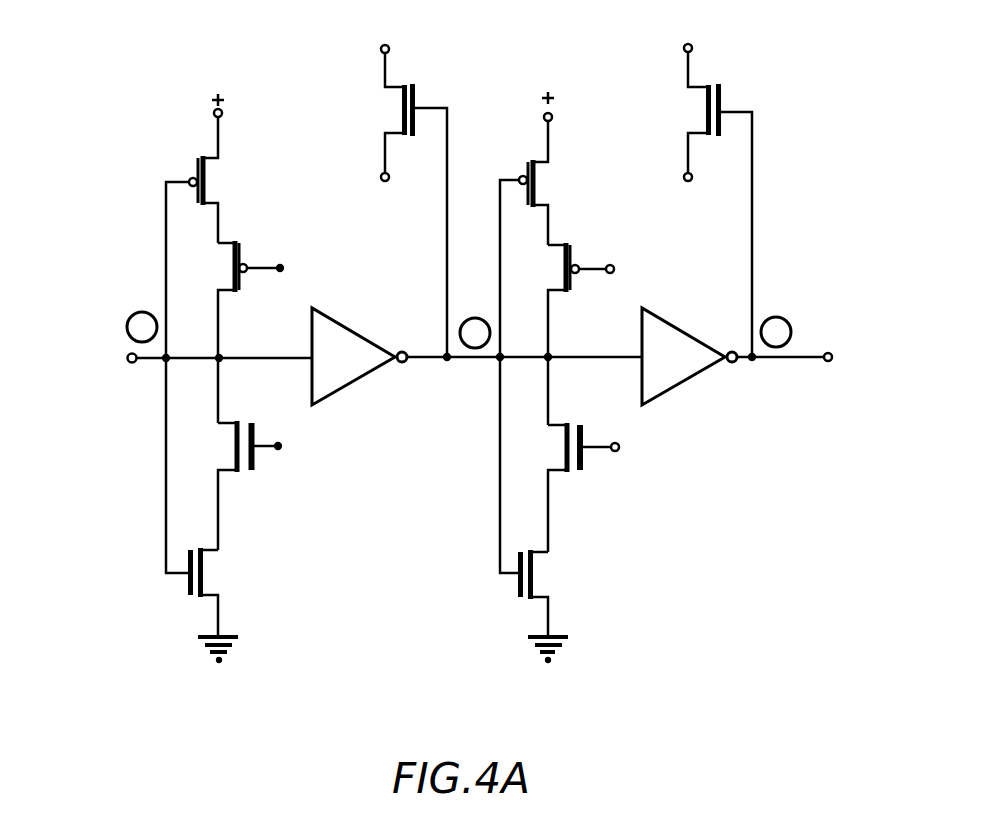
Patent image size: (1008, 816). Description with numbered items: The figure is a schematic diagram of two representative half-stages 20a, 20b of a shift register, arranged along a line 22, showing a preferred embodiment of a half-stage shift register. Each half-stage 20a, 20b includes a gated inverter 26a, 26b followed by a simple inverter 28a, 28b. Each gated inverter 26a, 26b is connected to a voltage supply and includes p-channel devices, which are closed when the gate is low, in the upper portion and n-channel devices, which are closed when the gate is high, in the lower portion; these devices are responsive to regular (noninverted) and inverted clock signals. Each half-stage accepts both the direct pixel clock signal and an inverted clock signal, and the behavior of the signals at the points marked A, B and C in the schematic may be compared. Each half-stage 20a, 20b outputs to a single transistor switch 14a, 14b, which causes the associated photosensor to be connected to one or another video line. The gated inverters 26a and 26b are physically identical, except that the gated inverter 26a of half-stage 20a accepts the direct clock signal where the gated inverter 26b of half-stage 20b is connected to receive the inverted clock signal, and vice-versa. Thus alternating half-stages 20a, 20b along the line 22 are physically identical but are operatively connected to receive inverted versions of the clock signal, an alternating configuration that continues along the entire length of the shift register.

The gated inverter 26a is at (178, 116).
The gated inverter 26b is at (512, 83).
The half-stage 20a is at (405, 665).
The half-stage 20b is at (753, 663).
The simple inverter 28a is at (352, 378).
The simple inverter 28b is at (688, 372).
The transistor switch 14a is at (402, 118).
The transistor switch 14b is at (707, 108).
The line 22 is at (803, 358).